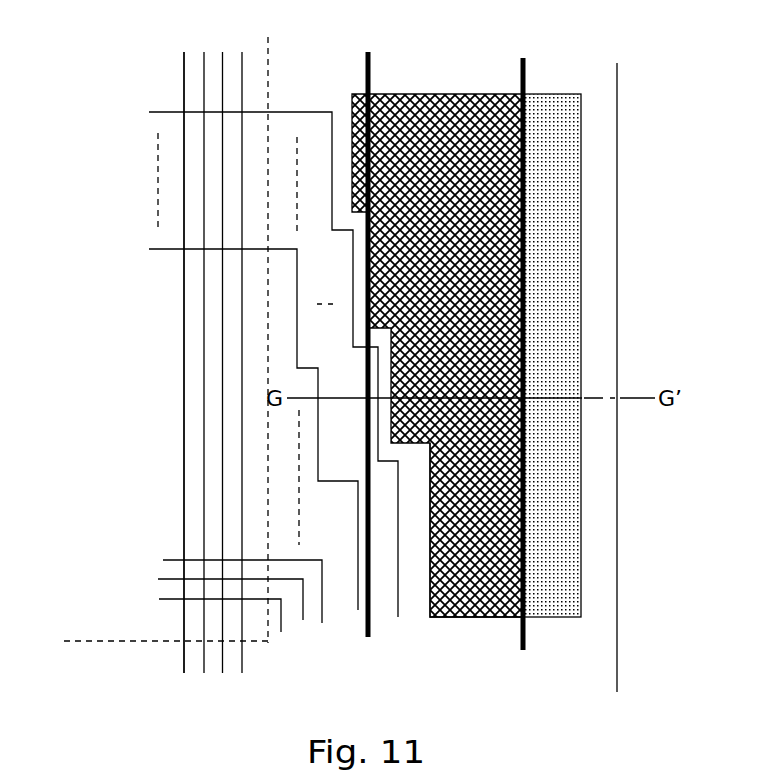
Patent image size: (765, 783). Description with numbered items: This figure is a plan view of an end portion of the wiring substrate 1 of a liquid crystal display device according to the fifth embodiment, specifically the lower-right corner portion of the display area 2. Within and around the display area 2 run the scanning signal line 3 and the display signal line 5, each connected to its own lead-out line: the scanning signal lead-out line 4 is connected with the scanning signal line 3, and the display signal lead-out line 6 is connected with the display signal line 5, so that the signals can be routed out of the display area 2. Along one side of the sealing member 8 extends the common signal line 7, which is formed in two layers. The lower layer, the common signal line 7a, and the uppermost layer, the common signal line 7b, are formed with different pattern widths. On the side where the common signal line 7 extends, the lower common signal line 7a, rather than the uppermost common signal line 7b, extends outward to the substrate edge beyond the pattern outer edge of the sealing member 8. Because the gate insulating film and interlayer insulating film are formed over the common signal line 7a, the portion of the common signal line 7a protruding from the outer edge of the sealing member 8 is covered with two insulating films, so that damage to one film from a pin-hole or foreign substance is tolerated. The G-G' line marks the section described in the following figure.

The wiring substrate 1 is at (609, 132).
The display area 2 is at (100, 641).
The scanning signal line 3 is at (160, 599).
The scanning signal lead-out line 4 is at (358, 596).
The display signal line 5 is at (184, 338).
The display signal lead-out line 6 is at (184, 662).
The common signal line 7 is at (418, 94).
The common signal line (lower layer) 7a is at (570, 94).
The common signal line (uppermost layer) 7b is at (450, 617).
The sealing member 8 is at (523, 62).